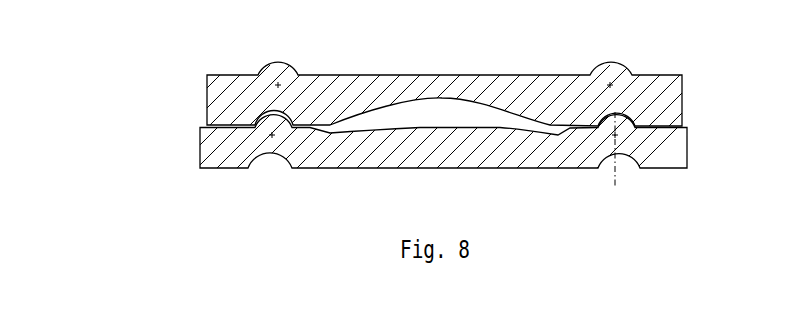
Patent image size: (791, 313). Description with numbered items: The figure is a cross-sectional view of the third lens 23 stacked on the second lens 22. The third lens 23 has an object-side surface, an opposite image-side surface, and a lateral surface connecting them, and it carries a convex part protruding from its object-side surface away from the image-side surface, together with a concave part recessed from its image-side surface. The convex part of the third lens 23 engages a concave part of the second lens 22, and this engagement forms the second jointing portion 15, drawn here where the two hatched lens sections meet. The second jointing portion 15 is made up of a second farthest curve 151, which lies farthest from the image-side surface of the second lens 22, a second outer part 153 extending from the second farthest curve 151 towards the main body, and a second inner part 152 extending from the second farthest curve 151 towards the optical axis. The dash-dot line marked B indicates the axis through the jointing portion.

The second jointing portion 15 is at (270, 113).
The second lens 22 is at (218, 88).
The third lens 23 is at (217, 150).
The second farthest curve 151 is at (615, 112).
The second inner part 152 is at (600, 135).
The second outer part 153 is at (637, 152).
The rivet axis B is at (613, 164).